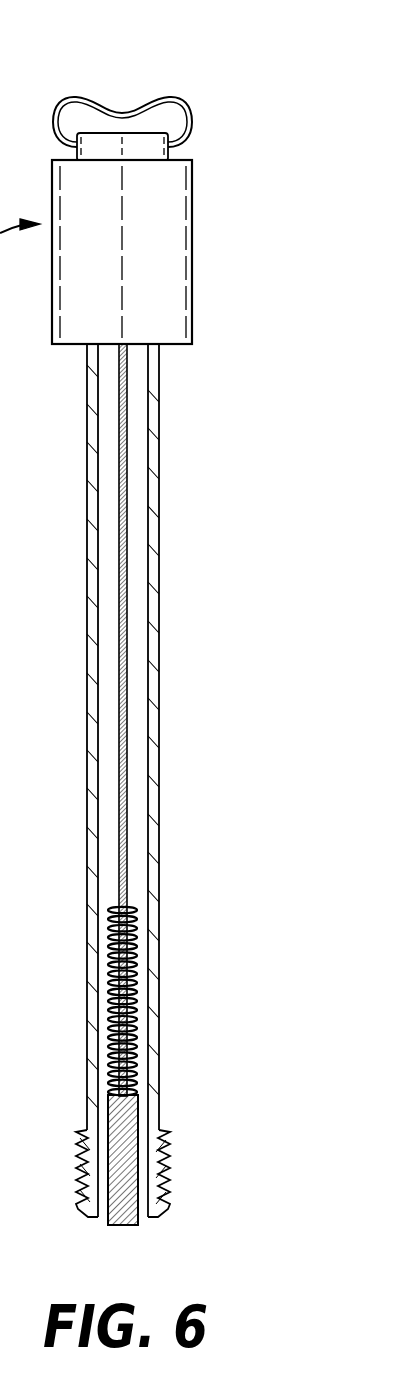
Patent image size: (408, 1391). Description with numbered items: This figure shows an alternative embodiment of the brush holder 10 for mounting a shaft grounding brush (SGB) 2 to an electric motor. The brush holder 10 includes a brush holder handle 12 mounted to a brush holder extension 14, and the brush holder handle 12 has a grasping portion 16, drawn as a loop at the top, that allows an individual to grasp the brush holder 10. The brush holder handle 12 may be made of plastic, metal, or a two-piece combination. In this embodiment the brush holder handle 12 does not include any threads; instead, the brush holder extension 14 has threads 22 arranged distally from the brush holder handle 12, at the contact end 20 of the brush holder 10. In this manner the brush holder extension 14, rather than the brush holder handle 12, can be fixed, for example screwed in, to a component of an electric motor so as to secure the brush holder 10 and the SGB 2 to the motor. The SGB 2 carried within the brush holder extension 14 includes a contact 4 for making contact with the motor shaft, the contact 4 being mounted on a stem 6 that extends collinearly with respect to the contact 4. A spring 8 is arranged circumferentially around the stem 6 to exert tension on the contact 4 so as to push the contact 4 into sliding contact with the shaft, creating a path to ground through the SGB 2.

The brush holder 10 is at (173, 650).
The brush holder handle 12 is at (192, 166).
The brush holder extension 14 is at (86, 430).
The grasping portion 16 is at (174, 100).
The shaft grounding brush 2 is at (185, 720).
The stem 6 is at (135, 542).
The spring 8 is at (110, 920).
The contact 4 is at (122, 1205).
The contact end 20 is at (152, 1172).
The threads 22 is at (78, 1165).